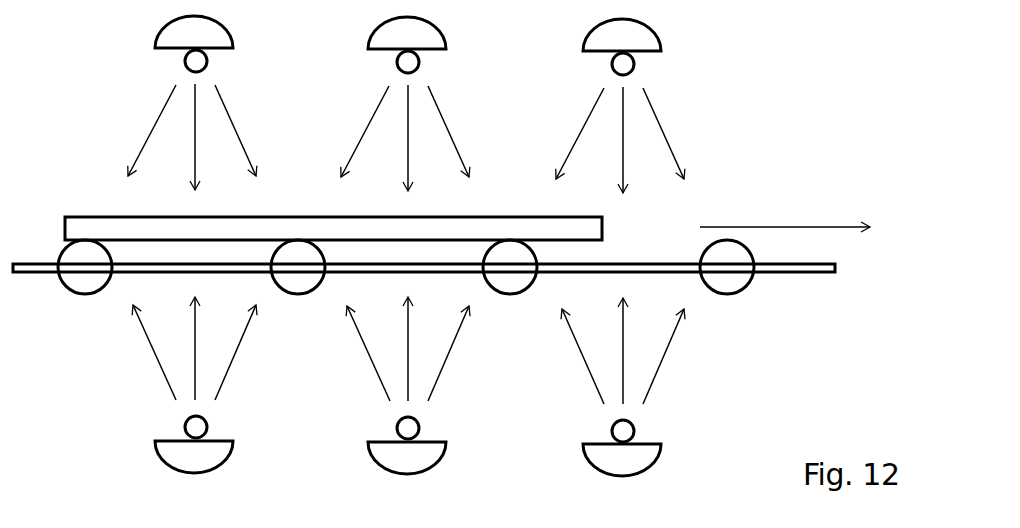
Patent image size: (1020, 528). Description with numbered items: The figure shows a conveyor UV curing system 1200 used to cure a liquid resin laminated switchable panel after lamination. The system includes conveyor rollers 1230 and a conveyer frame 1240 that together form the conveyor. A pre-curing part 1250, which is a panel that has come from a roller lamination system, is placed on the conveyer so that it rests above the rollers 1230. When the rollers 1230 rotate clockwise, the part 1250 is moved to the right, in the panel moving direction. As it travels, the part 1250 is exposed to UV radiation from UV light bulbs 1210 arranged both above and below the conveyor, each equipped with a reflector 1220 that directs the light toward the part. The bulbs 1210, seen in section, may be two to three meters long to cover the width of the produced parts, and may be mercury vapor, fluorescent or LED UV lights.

The UV curing system 1200 is at (792, 69).
The UV light bulb 1210 is at (185, 426).
The reflector 1220 is at (160, 452).
The conveyor roller 1230 is at (730, 285).
The conveyer frame 1240 is at (797, 273).
The pre-curing part 1250 is at (83, 228).